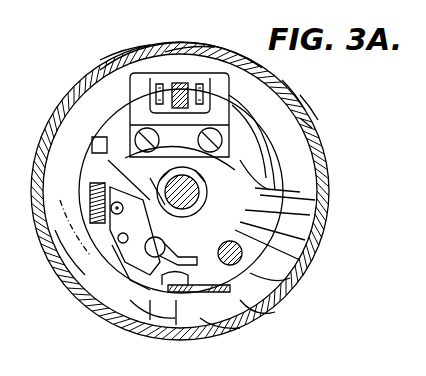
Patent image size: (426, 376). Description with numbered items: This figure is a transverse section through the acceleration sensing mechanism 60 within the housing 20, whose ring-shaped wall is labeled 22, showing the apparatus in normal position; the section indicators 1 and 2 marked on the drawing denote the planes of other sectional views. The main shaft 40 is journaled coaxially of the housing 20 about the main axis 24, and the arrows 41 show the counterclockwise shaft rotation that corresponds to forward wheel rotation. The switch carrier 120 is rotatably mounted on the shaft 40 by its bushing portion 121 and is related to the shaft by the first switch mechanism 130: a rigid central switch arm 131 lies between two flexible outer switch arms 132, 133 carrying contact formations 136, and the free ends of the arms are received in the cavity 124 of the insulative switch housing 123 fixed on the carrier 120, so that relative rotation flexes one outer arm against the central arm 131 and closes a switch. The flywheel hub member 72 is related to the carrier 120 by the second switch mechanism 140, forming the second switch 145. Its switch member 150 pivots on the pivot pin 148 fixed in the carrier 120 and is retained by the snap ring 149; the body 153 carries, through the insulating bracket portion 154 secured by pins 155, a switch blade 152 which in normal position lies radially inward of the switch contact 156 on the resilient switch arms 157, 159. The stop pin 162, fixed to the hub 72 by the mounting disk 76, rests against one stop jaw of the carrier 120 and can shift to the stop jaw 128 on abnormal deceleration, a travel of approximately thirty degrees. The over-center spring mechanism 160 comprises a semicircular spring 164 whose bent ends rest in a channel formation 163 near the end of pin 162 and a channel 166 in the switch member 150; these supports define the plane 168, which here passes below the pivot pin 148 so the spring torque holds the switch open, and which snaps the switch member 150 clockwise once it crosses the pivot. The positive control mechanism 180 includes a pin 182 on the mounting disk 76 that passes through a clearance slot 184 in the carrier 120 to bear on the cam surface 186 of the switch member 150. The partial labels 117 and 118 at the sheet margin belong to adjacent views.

The section line 1- 1 is at (176, 28).
The section line 2- 2 is at (33, 276).
The housing 20 is at (304, 100).
The housing ring 22 is at (312, 66).
The main axis 24 is at (196, 213).
The main shaft 40 is at (222, 171).
The arrows 41 is at (104, 47).
The acceleration sensing mechanism 60 is at (300, 110).
The flywheel hub member 72 is at (313, 132).
The mounting disk 76 is at (275, 162).
The part 117 is at (413, 363).
The part 118 is at (413, 311).
The switch carrier 120 is at (290, 182).
The bushing portion 121 is at (290, 236).
The switch housing 123 is at (281, 130).
The cavity 124 is at (209, 44).
The stop jaw 128 is at (292, 192).
The first switch mechanism 130 is at (90, 87).
The central switch arm 131 is at (155, 168).
The outer switch arm 132 is at (222, 97).
The outer switch arm 133 is at (143, 86).
The contact formations 136 is at (100, 70).
The second switch mechanism 140 is at (208, 299).
The second switch 145 is at (212, 328).
The pivot pin 148 is at (95, 205).
The snap ring 149 is at (100, 132).
The switch member 150 is at (130, 327).
The switch blade 152 is at (186, 268).
The body 153 is at (84, 232).
The bracket portion 154 is at (150, 302).
The pins 155 is at (118, 252).
The switch contact 156 is at (168, 284).
The switch arm 157 is at (176, 312).
The switch arm 159 is at (252, 315).
The over-center spring mechanism 160 is at (282, 228).
The stop pin 162 is at (300, 262).
The channel formation 163 is at (280, 275).
The spring 164 is at (310, 200).
The channel 166 is at (60, 250).
The plane 168 is at (58, 197).
The positive control mechanism 180 is at (165, 140).
The pin 182 is at (214, 133).
The clearance slot 184 is at (147, 198).
The cam surface 186 is at (165, 208).